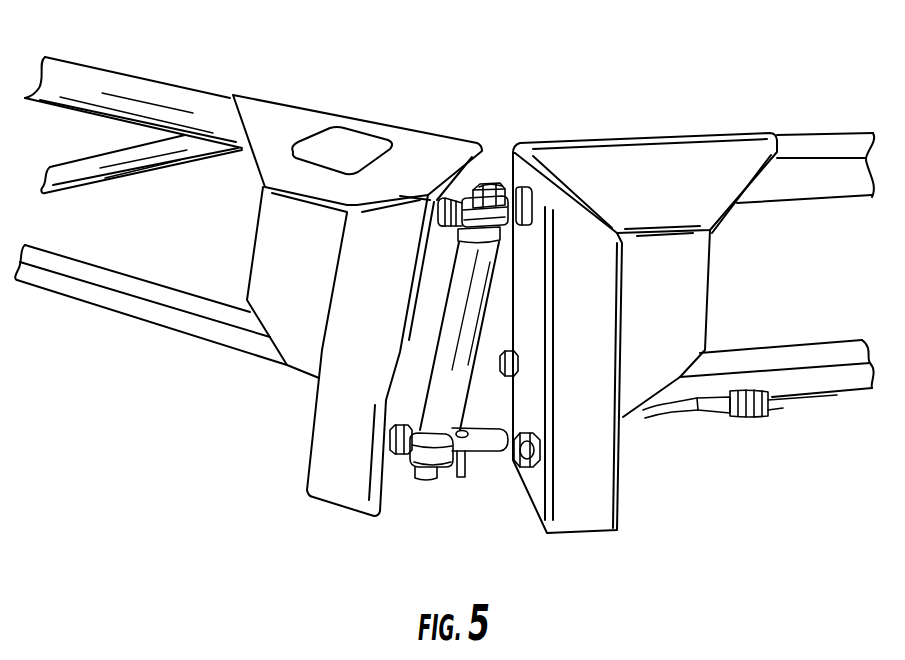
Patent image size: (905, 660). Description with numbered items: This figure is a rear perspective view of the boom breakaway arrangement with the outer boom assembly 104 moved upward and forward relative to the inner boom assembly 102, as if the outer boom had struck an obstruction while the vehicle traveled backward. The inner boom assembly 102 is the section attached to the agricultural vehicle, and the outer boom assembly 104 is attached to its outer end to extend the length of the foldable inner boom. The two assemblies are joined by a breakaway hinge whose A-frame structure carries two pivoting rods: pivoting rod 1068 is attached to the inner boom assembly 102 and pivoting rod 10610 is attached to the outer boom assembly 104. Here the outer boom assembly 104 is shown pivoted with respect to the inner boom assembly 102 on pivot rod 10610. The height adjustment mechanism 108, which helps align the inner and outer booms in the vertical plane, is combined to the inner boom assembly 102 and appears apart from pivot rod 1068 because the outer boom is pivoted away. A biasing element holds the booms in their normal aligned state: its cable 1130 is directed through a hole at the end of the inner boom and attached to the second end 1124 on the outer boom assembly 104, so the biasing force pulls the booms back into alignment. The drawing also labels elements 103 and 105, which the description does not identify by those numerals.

The inner boom assembly 102 is at (683, 137).
The link assembly 103 is at (498, 307).
The outer boom assembly 104 is at (308, 108).
The rod / cylinder of link 105 is at (438, 342).
The height adjustment mechanism 108 is at (543, 450).
The pivoting rod 10610 is at (485, 184).
The pivoting rod 1068 is at (425, 474).
The second end of biasing element 1124 is at (485, 458).
The cable 1130 is at (783, 407).